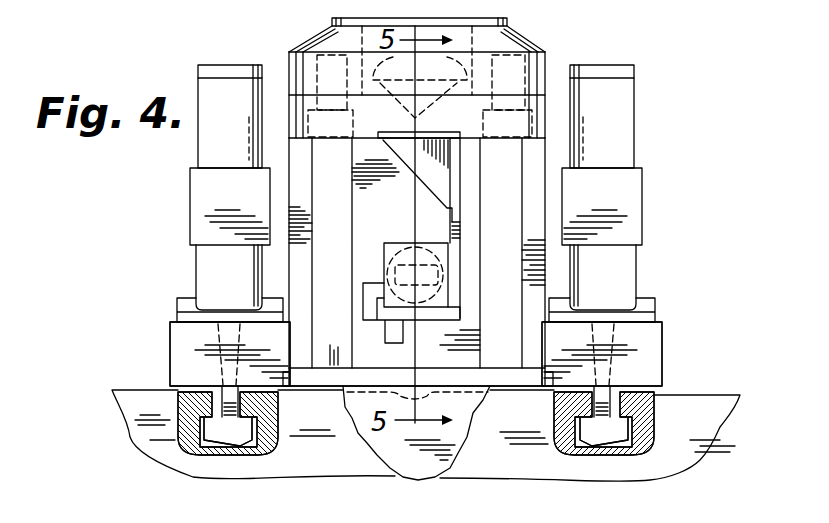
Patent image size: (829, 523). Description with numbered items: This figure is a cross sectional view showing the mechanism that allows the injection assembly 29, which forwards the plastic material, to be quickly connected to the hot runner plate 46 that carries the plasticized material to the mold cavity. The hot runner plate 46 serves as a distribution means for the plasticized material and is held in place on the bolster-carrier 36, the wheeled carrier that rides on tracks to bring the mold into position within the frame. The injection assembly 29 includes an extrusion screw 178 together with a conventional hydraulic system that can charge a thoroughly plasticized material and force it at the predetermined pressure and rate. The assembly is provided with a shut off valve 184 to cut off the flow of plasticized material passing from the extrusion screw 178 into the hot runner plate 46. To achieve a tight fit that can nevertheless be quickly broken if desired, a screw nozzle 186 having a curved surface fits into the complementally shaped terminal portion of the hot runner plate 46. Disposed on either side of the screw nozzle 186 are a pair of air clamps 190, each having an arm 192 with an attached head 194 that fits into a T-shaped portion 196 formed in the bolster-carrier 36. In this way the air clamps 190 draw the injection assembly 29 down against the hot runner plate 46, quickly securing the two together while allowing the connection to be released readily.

The injection assembly 29 is at (546, 46).
The extrusion screw 178 is at (425, 114).
The shut off valve 184 is at (406, 241).
The screw nozzle 186 is at (397, 393).
The hot runner plate 46 is at (390, 467).
The bolster-carrier 36 is at (137, 437).
The air clamps 190 is at (195, 225).
The arm 192 is at (223, 386).
The head 194 is at (217, 432).
The T-shaped portion 196 is at (253, 447).